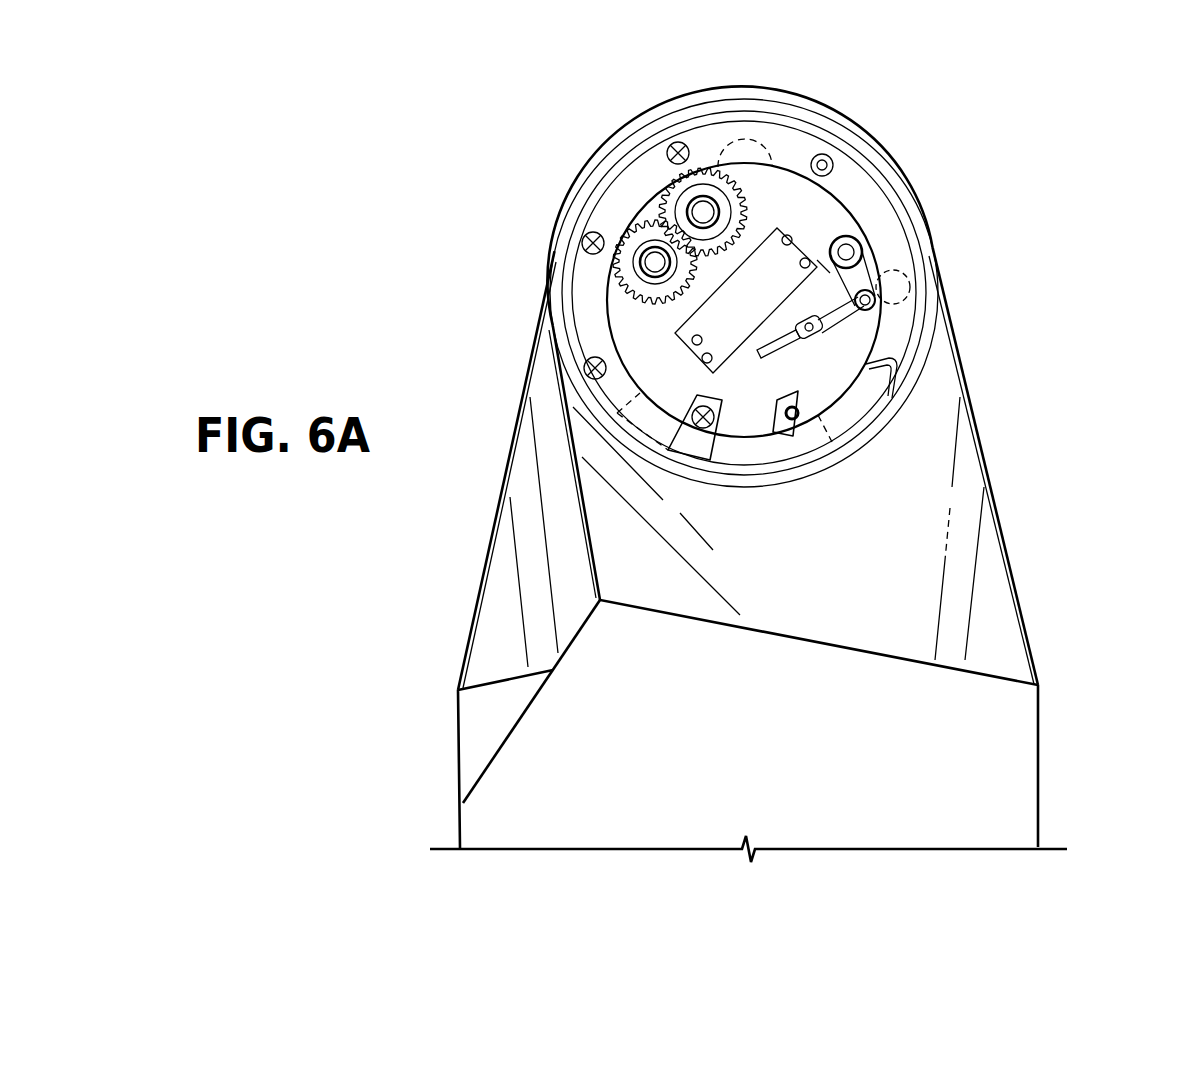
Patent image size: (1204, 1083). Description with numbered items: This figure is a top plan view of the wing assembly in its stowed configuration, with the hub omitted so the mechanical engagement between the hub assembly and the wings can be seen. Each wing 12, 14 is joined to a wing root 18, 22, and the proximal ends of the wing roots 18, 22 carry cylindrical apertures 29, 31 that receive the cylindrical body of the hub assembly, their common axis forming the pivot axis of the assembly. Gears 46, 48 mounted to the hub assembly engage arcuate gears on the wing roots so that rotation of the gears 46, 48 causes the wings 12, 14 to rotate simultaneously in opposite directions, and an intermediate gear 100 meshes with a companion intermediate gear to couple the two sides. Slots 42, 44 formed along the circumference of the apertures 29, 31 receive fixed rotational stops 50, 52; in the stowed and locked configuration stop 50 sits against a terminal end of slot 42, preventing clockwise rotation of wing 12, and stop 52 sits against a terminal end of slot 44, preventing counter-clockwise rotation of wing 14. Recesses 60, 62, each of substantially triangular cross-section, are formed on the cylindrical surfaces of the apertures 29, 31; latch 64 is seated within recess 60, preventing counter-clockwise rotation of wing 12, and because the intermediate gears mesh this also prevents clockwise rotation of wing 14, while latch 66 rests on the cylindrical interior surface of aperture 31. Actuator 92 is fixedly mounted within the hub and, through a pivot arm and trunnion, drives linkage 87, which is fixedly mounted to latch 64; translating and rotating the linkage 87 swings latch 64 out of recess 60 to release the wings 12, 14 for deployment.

The wing 12 is at (472, 730).
The wing 14 is at (1008, 769).
The wing root 18 is at (502, 612).
The wing root 22 is at (983, 620).
The cylindrical aperture 29 is at (880, 333).
The cylindrical aperture 31 is at (778, 344).
The slot 42 is at (617, 413).
The slot 44 is at (868, 392).
The gear 46 is at (633, 293).
The gear 48 is at (658, 195).
The rotational stop 50 is at (797, 420).
The rotational stop 52 is at (706, 437).
The recess 60 is at (905, 295).
The recess 62 is at (737, 140).
The latch 64 is at (895, 268).
The latch 66 is at (863, 273).
The linkage 87 is at (850, 312).
The actuator 92 is at (736, 337).
The intermediate gear 100 is at (628, 247).